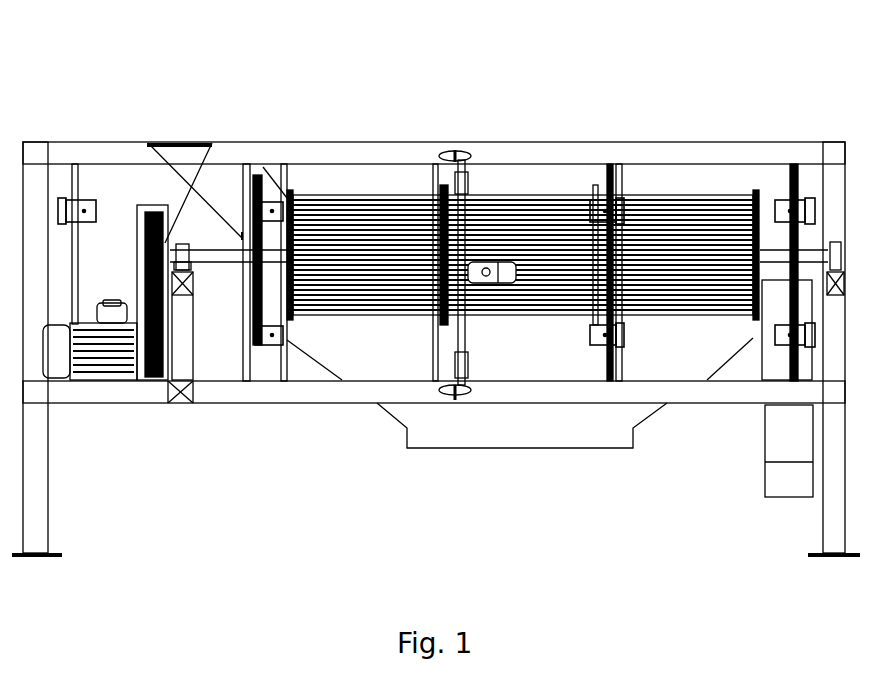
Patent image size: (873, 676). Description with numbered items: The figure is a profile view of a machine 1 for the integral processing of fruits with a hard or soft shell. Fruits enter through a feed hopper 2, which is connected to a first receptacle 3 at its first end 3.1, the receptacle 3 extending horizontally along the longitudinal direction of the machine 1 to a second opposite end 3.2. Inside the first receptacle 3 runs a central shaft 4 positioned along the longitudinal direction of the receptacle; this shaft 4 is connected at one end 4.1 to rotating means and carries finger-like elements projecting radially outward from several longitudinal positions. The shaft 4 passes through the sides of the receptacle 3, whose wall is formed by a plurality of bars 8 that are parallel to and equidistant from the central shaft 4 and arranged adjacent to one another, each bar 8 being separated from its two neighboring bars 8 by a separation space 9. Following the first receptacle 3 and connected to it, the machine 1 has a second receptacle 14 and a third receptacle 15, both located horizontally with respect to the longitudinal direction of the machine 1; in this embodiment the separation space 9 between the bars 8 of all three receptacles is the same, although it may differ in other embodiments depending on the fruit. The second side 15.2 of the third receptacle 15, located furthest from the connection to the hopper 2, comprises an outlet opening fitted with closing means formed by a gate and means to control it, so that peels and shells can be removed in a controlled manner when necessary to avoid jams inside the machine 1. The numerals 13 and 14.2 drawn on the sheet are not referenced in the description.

The machine 1 is at (700, 72).
The feed hopper 2 is at (223, 186).
The first receptacle 3 is at (383, 300).
The first end 3.1 is at (280, 293).
The second opposite end 3.2 is at (428, 315).
The central shaft 4 is at (207, 253).
The end of the central shaft 4.1 is at (221, 183).
The bars 8 is at (473, 225).
The separation space 9 is at (677, 227).
The collecting trough 13 is at (562, 318).
The second receptacle 14 is at (670, 312).
The container outlet 14.2 is at (745, 303).
The third receptacle 15 is at (616, 549).
The second side 15.2 is at (736, 549).